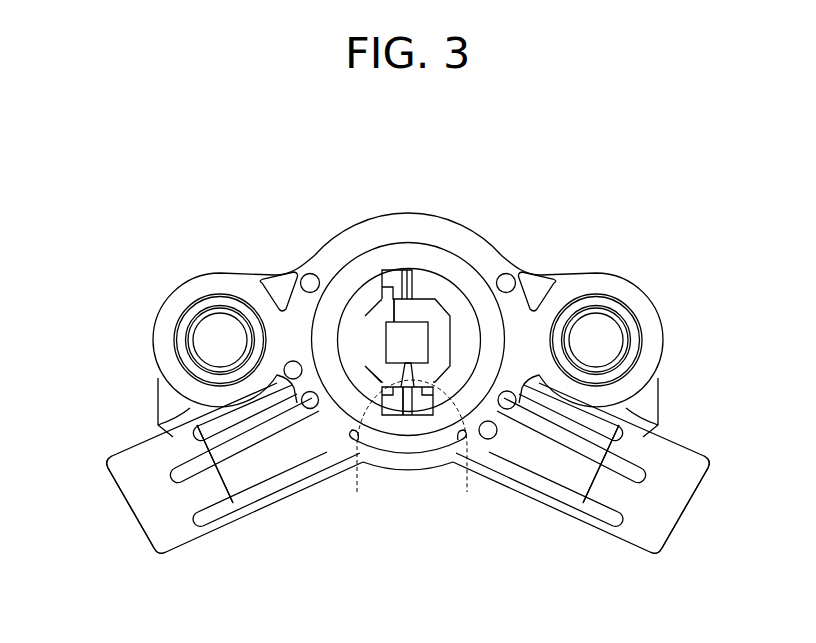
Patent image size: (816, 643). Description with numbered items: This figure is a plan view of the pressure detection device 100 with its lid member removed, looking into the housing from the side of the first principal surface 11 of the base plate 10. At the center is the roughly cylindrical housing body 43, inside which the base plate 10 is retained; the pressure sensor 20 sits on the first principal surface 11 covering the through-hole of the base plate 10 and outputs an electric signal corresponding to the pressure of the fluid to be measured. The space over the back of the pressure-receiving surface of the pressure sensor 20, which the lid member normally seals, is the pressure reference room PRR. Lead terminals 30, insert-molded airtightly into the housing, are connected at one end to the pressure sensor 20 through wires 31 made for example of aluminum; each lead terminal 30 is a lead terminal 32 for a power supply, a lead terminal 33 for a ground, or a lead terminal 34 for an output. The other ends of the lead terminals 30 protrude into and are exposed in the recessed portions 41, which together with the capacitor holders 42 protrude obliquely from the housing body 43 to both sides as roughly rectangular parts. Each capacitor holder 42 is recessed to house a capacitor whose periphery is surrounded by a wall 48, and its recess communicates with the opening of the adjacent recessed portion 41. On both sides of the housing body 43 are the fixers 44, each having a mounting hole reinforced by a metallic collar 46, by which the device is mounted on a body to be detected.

The base plate 10 is at (440, 300).
The first principal surface 11 is at (462, 300).
The pressure sensor 20 is at (411, 330).
The housing body 43 is at (427, 318).
The lead terminals 30 is at (395, 276).
The wires 31 is at (382, 285).
The lead terminal for a power supply 32 is at (593, 425).
The lead terminal for a ground 33 is at (243, 440).
The lead terminal for an output 34 is at (223, 425).
The recessed portions 41 is at (278, 459).
The capacitor holders 42 is at (146, 556).
The fixers 44 is at (183, 297).
The metallic collar 46 is at (183, 337).
The wall 48 is at (130, 475).
The pressure detection device 100 is at (675, 210).
The pressure reference room PRR is at (481, 341).